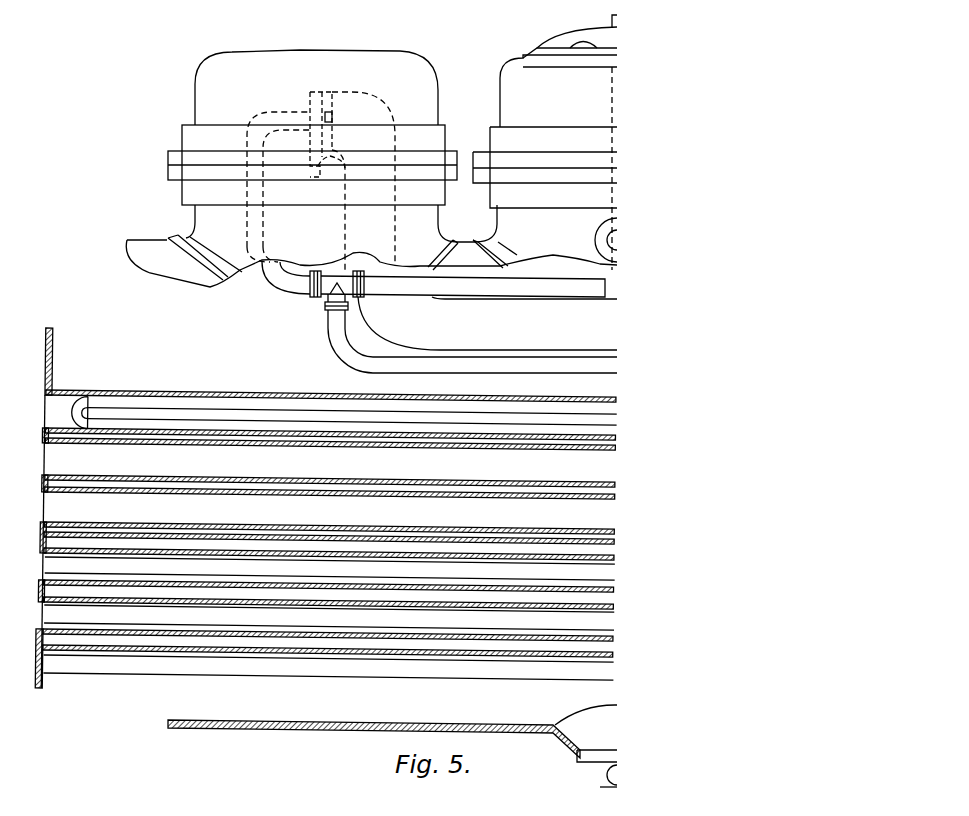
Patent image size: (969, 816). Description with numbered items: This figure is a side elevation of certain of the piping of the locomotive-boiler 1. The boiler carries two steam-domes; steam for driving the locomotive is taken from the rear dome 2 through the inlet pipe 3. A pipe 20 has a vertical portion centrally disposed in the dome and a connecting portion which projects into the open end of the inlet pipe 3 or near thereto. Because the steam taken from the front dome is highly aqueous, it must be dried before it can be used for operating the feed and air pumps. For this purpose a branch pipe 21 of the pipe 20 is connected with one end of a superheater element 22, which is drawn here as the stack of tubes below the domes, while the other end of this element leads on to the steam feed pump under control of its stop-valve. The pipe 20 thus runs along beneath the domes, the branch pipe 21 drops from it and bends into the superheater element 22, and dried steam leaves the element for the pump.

The locomotive-boiler 1 is at (168, 262).
The rear dome 2 is at (245, 76).
The inlet pipe 3 is at (330, 113).
The pipe 20 is at (305, 288).
The branch pipe 21 is at (345, 348).
The superheater element 22 is at (175, 545).